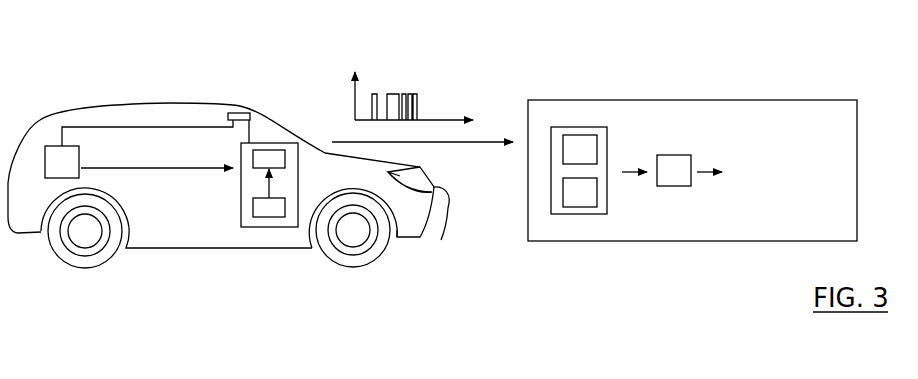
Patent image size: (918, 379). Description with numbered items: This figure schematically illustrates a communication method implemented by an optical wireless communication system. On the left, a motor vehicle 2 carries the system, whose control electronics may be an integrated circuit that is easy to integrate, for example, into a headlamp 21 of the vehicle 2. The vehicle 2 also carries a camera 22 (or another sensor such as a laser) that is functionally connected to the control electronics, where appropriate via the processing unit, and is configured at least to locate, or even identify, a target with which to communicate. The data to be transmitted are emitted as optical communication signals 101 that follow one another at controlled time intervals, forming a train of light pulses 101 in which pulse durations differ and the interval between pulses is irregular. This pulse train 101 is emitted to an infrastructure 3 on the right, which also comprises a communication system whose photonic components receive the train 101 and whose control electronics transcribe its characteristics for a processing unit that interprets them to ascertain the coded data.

The vehicle 2 is at (115, 93).
The infrastructure 3 is at (778, 100).
The headlamp 21 is at (441, 240).
The camera 22 is at (240, 113).
The train of light pulses 101 is at (457, 90).